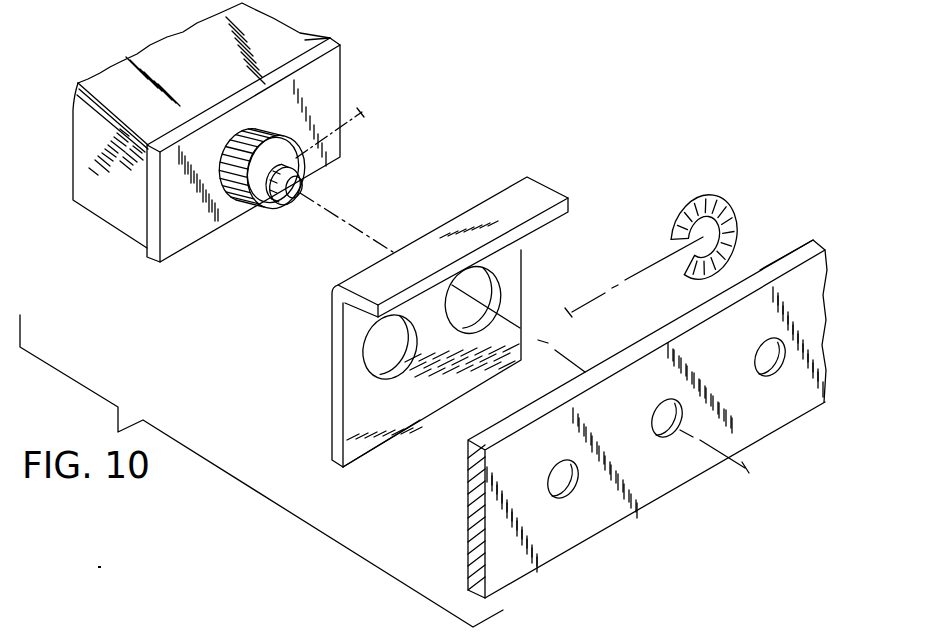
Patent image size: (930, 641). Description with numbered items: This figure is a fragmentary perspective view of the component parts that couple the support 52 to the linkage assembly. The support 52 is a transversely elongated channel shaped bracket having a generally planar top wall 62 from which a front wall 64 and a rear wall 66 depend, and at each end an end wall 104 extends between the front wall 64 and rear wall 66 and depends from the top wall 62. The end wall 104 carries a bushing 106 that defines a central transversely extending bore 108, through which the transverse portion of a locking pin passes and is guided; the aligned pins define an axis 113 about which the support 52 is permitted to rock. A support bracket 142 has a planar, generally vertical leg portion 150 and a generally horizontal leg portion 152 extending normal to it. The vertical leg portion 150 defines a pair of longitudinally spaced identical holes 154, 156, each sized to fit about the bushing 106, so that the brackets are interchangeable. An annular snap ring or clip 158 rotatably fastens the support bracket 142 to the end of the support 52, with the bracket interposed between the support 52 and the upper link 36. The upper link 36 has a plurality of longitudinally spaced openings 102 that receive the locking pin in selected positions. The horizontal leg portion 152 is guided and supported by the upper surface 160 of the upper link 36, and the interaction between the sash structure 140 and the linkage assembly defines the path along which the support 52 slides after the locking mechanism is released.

The upper link 36 is at (600, 527).
The support 52 is at (167, 44).
The top wall 62 is at (210, 68).
The front wall 64 is at (305, 40).
The rear wall 66 is at (118, 217).
The openings 102 is at (565, 490).
The end wall 104 is at (340, 87).
The bushing 106 is at (245, 148).
The bore 108 is at (269, 200).
The axis 113 is at (347, 228).
The sash structure 140 is at (585, 175).
The support bracket 142 is at (420, 417).
The vertical leg portion 150 is at (345, 408).
The horizontal leg portion 152 is at (537, 183).
The hole 154 is at (487, 303).
The hole 156 is at (377, 352).
The snap ring or clip 158 is at (727, 208).
The upper surface 160 is at (790, 258).